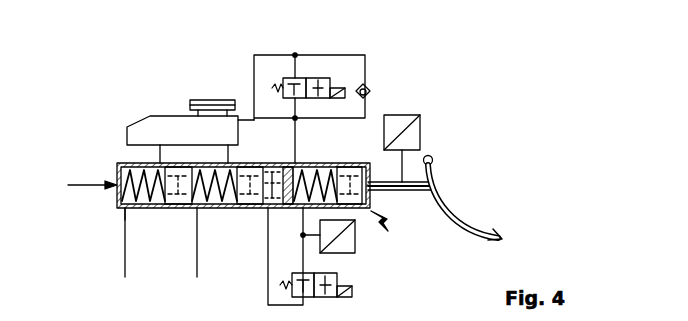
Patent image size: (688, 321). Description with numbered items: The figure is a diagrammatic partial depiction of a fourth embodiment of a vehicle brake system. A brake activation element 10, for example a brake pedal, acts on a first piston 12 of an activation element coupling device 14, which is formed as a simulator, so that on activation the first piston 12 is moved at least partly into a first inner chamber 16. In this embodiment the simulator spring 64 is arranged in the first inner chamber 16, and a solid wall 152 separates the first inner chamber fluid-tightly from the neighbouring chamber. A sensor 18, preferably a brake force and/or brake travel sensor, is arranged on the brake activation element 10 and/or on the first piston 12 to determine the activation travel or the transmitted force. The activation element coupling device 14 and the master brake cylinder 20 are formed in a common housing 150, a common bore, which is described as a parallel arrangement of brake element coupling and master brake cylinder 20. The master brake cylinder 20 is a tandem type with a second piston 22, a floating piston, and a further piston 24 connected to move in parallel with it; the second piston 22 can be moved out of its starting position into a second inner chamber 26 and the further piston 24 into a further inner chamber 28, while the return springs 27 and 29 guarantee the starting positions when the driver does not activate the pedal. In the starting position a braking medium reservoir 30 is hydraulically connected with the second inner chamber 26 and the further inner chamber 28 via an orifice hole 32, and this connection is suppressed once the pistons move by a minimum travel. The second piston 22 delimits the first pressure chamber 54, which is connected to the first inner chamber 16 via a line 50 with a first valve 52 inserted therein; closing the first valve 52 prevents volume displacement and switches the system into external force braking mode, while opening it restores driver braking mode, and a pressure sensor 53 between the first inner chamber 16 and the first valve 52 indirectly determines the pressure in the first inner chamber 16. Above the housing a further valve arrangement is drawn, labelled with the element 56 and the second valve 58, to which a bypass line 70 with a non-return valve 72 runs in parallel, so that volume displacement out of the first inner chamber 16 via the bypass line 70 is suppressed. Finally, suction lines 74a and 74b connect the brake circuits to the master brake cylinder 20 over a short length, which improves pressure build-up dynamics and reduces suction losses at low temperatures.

The brake activation element 10 is at (450, 206).
The first piston 12 is at (363, 167).
The activation element coupling device 14 is at (388, 231).
The first inner chamber 16 is at (307, 165).
The sensor 18 is at (420, 120).
The master brake cylinder 20 is at (77, 184).
The second piston 22 is at (258, 210).
The further piston 24 is at (176, 209).
The second inner chamber 26 is at (247, 209).
The return spring 27 is at (212, 209).
The further inner chamber 28 is at (120, 206).
The return spring 29 is at (140, 209).
The braking medium reservoir 30 is at (138, 130).
The orifice hole 32 is at (160, 164).
The line 50 is at (268, 298).
The first valve 52 is at (352, 287).
The pressure sensor 53 is at (353, 248).
The first pressure chamber 54 is at (277, 209).
The control valve 56 is at (290, 77).
The second valve 58 is at (318, 77).
The simulator spring 64 is at (330, 168).
The bypass line 70 is at (365, 68).
The non-return valve 72 is at (370, 91).
The suction line 74a is at (197, 268).
The suction line 74b is at (125, 268).
The common housing 150 is at (140, 210).
The solid wall 152 is at (284, 164).